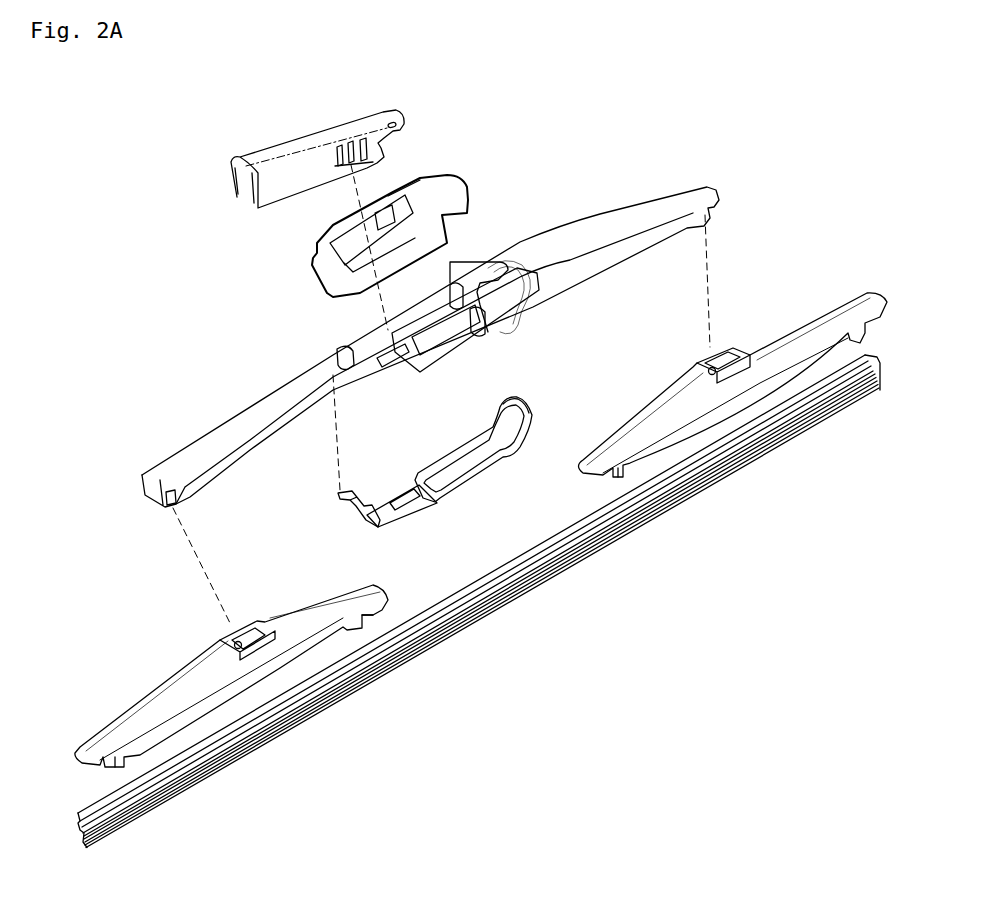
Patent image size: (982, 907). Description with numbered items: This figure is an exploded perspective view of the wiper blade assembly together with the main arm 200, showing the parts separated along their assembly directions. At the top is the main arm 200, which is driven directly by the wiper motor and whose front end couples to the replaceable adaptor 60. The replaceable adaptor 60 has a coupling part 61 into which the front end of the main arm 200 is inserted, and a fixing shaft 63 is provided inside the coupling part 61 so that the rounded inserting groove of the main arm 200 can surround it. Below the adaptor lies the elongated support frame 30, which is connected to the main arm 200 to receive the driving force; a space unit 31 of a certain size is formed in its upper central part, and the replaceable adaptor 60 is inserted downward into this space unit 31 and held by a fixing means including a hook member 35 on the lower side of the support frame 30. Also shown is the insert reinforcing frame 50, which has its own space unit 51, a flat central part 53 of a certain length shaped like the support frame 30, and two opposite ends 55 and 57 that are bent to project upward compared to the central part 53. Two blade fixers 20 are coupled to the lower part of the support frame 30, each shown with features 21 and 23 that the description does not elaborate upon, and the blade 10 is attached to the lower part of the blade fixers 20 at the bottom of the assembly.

The main arm 200 is at (305, 136).
The replaceable adaptor 60 is at (466, 168).
The coupling part 61 is at (343, 246).
The fixing shaft 63 is at (393, 191).
The support frame 30 is at (178, 440).
The hook member 35 is at (343, 347).
The space unit 31 is at (432, 305).
The insert reinforcing frame 50 is at (527, 400).
The space unit 51 is at (496, 448).
The opposite end 55 is at (533, 420).
The central part 53 is at (382, 540).
The opposite end 57 is at (340, 493).
The blade fixer 20 is at (823, 313).
The pivot hole 21 is at (247, 637).
The claw 23 is at (380, 594).
The blade 10 is at (425, 643).